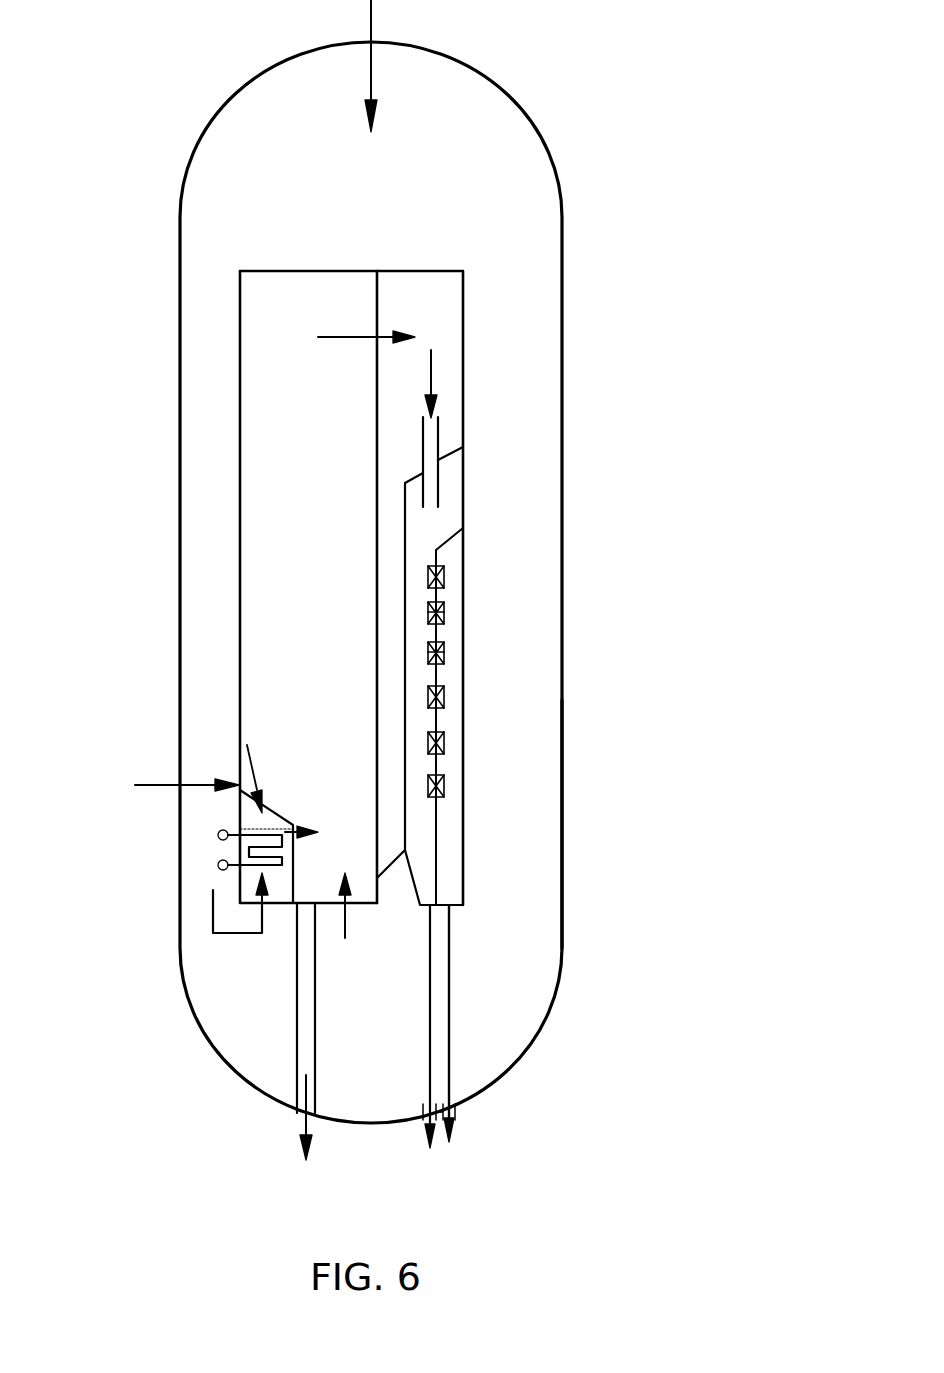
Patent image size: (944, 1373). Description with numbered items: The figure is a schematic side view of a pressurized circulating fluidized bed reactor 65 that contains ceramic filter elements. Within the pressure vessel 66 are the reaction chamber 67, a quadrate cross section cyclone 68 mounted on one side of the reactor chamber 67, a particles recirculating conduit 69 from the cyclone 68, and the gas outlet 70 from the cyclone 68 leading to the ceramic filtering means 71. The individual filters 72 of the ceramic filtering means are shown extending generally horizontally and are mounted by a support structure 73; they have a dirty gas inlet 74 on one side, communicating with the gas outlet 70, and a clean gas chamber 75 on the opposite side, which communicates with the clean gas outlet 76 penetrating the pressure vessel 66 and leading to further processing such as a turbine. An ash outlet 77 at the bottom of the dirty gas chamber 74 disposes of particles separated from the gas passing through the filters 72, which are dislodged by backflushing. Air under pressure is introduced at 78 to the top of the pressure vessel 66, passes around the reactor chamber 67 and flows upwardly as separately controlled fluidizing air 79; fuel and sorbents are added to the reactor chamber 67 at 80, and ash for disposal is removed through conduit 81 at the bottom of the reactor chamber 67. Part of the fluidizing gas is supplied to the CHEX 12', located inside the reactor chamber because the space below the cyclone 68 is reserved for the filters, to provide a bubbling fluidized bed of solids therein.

The pressurized circulating fluidized bed reactor 65 is at (558, 120).
The pressure vessel 66 is at (562, 850).
The reaction chamber 67 is at (237, 615).
The quadrate cross section cyclone 68 is at (452, 330).
The particles recirculating conduit 69 is at (390, 843).
The gas outlet 70 is at (440, 477).
The ceramic filtering means 71 is at (462, 550).
The filters 72 is at (445, 653).
The support structure 73 is at (437, 837).
The dirty gas inlet 74 is at (420, 643).
The clean gas chamber 75 is at (455, 610).
The clean gas outlet 76 is at (452, 1008).
The ash outlet 77 is at (428, 1055).
The air introduction 78 is at (372, 22).
The fluidizing air 79 is at (332, 940).
The fuel and sorbent addition 80 is at (162, 782).
The ash conduit 81 is at (305, 1038).
The CHEX 12' is at (204, 846).